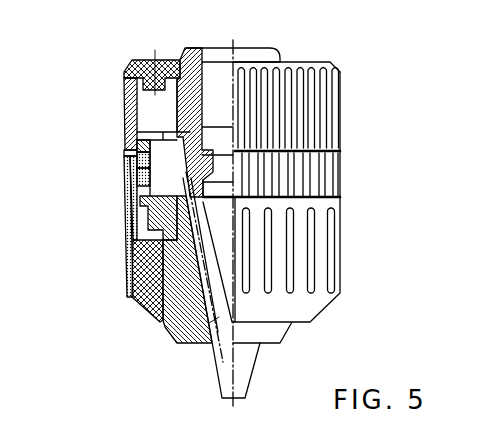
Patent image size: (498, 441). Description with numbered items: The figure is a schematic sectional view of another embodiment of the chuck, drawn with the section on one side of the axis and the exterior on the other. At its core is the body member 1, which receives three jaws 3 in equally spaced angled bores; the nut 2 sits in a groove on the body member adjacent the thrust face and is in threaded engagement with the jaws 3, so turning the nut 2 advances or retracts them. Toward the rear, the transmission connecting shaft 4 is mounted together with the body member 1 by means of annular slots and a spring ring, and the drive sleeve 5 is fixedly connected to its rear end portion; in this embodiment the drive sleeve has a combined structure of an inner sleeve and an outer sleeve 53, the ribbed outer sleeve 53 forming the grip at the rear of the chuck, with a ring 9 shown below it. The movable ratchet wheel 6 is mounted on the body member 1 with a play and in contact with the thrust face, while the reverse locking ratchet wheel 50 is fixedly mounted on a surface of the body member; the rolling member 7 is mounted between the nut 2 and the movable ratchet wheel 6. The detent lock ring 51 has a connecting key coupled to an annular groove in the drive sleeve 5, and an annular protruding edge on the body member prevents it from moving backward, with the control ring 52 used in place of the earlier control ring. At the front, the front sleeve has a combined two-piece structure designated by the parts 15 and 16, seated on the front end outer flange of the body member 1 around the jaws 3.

The body member 1 is at (137, 66).
The nut 2 is at (153, 218).
The jaws 3 is at (175, 335).
The transmission connecting shaft 4 is at (183, 62).
The drive sleeve 5 is at (123, 88).
The movable ratchet wheel 6 is at (143, 205).
The rolling member 7 is at (127, 166).
The rear sleeve ring 9 is at (338, 167).
The front sleeve part 15 is at (133, 262).
The front sleeve part 16 is at (135, 282).
The reverse locking ratchet wheel 50 is at (140, 188).
The detent lock ring 51 is at (122, 148).
The control ring 52 is at (137, 177).
The outer sleeve 53 is at (338, 95).